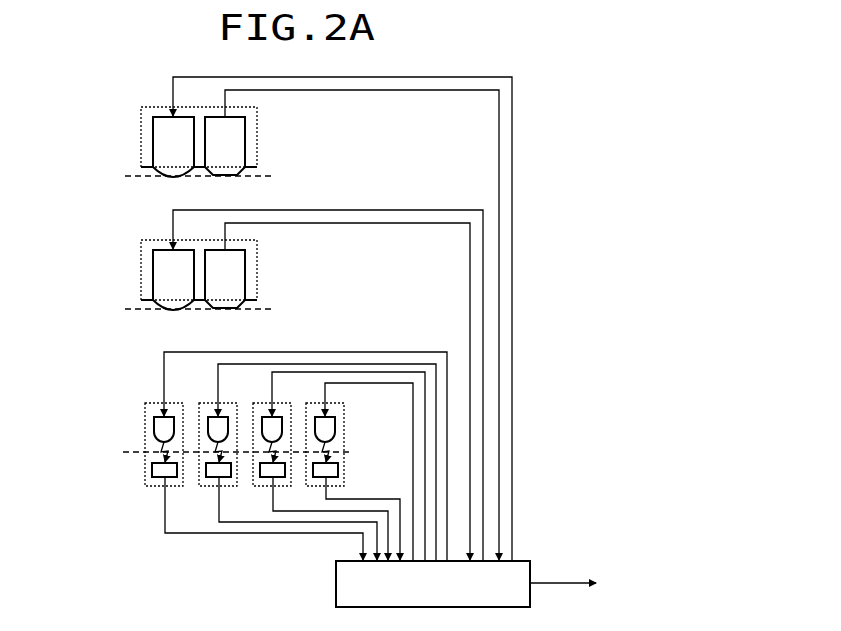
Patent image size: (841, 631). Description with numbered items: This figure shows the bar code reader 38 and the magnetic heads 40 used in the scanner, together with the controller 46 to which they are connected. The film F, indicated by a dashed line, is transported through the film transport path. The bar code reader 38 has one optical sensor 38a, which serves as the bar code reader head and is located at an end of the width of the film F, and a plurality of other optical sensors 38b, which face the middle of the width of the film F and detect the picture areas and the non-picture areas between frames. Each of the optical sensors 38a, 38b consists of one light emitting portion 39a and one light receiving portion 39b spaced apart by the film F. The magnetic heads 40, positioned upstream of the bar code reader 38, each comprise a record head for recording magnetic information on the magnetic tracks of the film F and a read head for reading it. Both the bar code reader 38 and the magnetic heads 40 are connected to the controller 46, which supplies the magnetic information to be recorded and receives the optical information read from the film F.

The bar code reader 38 is at (245, 456).
The optical sensor 38a is at (146, 438).
The optical sensors 38b is at (240, 417).
The light emitting portion 39a is at (213, 428).
The light receiving portion 39b is at (363, 468).
The magnetic head 40 is at (284, 319).
The controller 46 is at (336, 580).
The film F is at (275, 176).